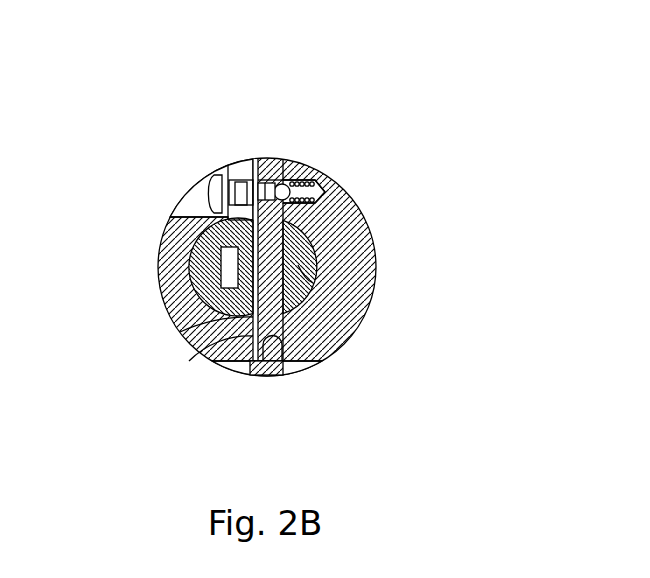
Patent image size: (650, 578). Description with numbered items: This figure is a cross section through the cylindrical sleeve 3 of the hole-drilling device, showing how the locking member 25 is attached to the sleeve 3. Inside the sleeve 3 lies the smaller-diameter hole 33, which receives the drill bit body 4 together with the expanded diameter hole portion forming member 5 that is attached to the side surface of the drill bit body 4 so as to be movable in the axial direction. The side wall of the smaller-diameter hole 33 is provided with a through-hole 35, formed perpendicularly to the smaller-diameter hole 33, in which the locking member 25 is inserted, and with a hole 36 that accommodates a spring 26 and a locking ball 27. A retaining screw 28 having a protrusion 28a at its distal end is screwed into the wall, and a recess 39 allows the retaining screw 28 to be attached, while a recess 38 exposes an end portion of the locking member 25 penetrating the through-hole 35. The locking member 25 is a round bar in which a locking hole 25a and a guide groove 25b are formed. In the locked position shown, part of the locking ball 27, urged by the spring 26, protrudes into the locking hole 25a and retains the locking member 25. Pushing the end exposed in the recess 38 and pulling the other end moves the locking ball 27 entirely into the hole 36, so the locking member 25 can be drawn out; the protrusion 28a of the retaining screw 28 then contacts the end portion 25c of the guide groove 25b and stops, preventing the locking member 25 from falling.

The cylindrical sleeve 3 is at (376, 282).
The drill bit body 4 is at (322, 238).
The expanded diameter hole portion forming member 5 is at (222, 240).
The locking member 25 is at (262, 157).
The locking hole 25a is at (273, 158).
The guide groove 25b is at (182, 332).
The end portion of the guide groove 25c is at (193, 362).
The spring 26 is at (325, 192).
The locking ball 27 is at (290, 185).
The retaining screw 28 is at (207, 200).
The protrusion 28a is at (233, 180).
The smaller-diameter hole 33 is at (312, 283).
The through-hole 35 is at (270, 378).
The hole 36 is at (298, 205).
The recess 38 is at (298, 365).
The recess 39 is at (193, 212).